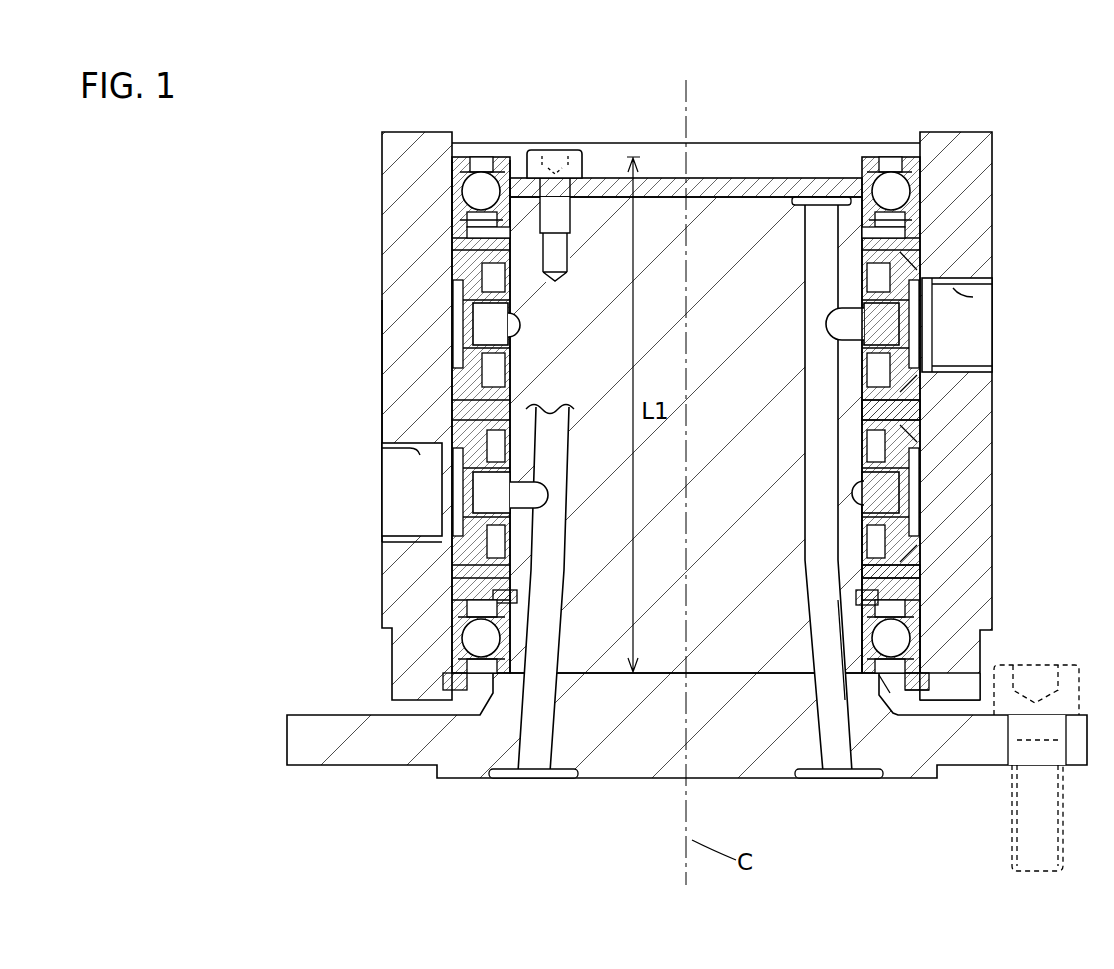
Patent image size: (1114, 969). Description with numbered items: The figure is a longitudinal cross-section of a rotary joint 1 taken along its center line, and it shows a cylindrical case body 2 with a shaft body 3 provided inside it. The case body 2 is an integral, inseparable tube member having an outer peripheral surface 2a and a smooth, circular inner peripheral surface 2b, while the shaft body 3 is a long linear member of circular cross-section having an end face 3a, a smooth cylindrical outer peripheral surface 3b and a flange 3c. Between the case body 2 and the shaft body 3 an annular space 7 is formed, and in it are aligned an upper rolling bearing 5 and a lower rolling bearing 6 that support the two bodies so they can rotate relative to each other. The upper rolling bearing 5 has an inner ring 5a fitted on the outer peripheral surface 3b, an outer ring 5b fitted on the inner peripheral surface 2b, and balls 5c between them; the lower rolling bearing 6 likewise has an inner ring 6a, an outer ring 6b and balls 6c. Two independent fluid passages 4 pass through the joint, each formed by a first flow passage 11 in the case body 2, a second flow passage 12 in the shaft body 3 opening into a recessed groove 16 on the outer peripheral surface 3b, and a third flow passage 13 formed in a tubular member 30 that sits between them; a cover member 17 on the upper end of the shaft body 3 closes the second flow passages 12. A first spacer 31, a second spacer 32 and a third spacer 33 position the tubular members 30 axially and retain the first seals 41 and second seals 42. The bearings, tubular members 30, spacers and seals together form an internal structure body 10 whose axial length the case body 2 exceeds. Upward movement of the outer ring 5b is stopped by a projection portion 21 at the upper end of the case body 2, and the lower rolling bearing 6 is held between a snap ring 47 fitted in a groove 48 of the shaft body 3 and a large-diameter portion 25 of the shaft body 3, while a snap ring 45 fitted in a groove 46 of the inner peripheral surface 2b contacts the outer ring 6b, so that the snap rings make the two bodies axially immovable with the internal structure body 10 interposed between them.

The rotary joint 1 is at (1008, 138).
The case body 2 is at (369, 141).
The outer peripheral surface 2a is at (380, 402).
The inner peripheral surface 2b is at (455, 592).
The shaft body 3 is at (498, 378).
The end face 3a is at (893, 780).
The outer peripheral surface 3b is at (895, 540).
The flange 3c is at (985, 740).
The fluid passage 4 is at (392, 511).
The rolling bearing 5 is at (480, 143).
The inner ring 5a is at (506, 172).
The outer ring 5b is at (462, 170).
The balls 5c is at (481, 190).
The rolling bearing 6 is at (905, 701).
The inner ring 6a is at (870, 691).
The outer ring 6b is at (906, 622).
The balls 6c is at (900, 640).
The annular space 7 is at (487, 690).
The internal structure body 10 is at (441, 570).
The first flow passage 11 is at (405, 466).
The second flow passage 12 is at (540, 536).
The third flow passage 13 is at (470, 492).
The recessed groove 16 is at (522, 335).
The cover member 17 is at (806, 186).
The projection portion 21 is at (907, 139).
The large-diameter portion 25 is at (882, 680).
The tubular member 30 is at (470, 287).
The first spacer 31 is at (905, 243).
The second spacer 32 is at (910, 410).
The third spacer 33 is at (906, 592).
The first seal 41 is at (920, 265).
The second seal 42 is at (870, 258).
The snap ring 45 is at (932, 682).
The groove 46 is at (914, 692).
The snap ring 47 is at (858, 590).
The groove 48 is at (842, 648).